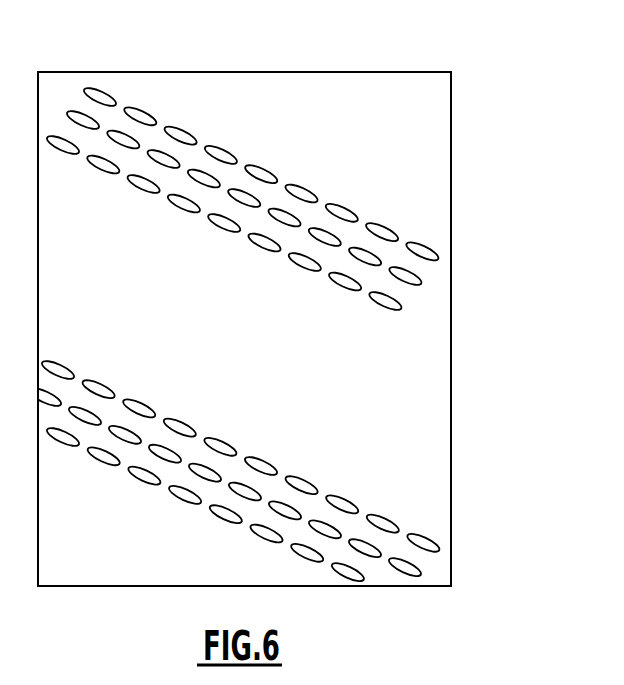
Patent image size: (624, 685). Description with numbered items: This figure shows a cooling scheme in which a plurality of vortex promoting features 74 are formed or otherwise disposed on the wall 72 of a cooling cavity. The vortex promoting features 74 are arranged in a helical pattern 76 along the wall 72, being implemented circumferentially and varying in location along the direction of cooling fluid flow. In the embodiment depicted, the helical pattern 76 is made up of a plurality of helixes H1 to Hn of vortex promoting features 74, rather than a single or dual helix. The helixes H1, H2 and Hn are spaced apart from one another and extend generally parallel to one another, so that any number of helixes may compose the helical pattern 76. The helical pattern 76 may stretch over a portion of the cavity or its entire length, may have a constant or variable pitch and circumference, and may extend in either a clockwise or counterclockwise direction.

The wall 72 is at (432, 183).
The vortex promoting features 74 is at (340, 214).
The helical pattern 76 is at (362, 163).
The first helix H1 is at (265, 164).
The second helix H2 is at (177, 157).
The nth helix Hn is at (83, 510).